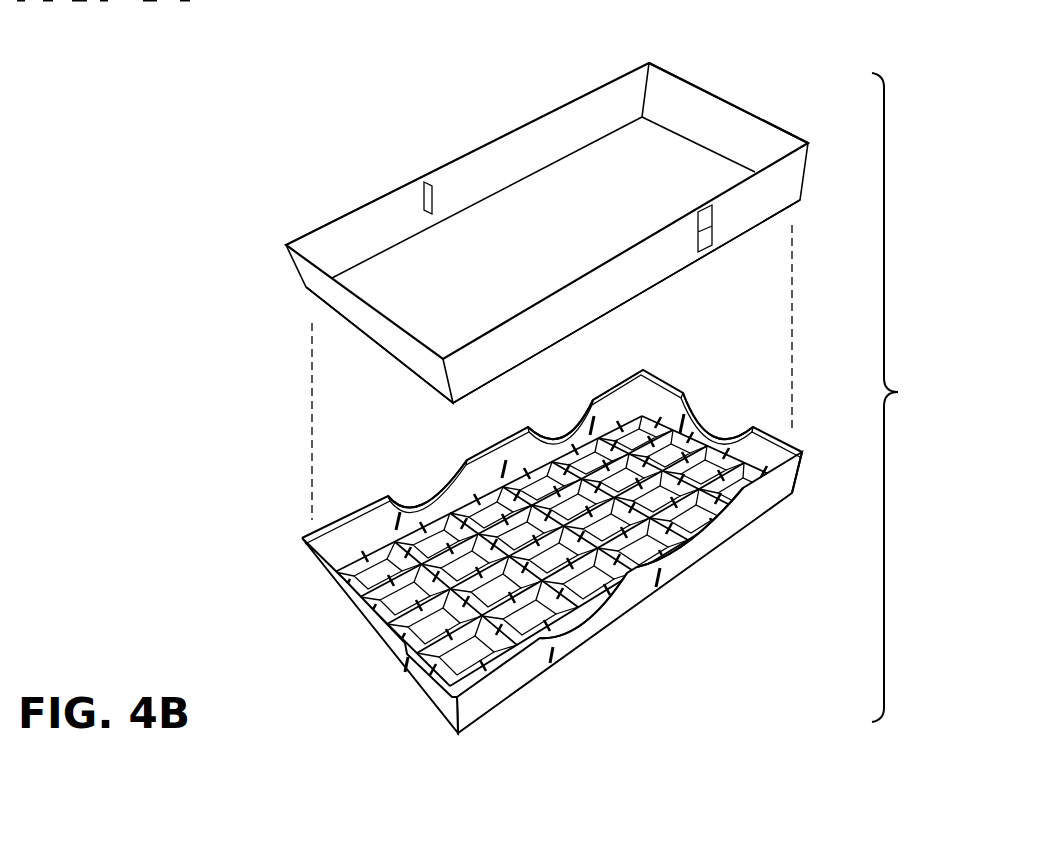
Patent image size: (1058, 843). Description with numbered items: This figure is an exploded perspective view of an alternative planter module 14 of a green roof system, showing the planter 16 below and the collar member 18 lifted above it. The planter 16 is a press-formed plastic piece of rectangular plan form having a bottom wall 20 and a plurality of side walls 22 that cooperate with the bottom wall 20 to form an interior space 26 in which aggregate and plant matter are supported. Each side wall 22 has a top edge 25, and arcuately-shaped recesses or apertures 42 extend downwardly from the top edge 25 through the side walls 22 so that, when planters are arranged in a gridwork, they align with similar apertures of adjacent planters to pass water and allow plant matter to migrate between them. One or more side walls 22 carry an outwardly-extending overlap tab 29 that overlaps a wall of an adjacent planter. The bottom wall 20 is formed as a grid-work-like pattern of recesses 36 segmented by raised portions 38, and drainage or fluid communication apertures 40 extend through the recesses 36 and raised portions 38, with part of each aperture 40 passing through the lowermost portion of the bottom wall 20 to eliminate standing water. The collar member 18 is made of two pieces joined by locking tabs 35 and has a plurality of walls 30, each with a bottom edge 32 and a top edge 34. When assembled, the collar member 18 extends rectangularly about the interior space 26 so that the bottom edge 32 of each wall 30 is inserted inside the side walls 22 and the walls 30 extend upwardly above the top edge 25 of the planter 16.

The planter module 14 is at (901, 397).
The planter 16 is at (562, 525).
The collar member 18 is at (735, 93).
The bottom wall 20 is at (697, 460).
The side walls 22 is at (663, 403).
The top edge 25 is at (806, 448).
The interior space 26 is at (538, 621).
The overlap tab 29 is at (745, 428).
The walls 30 is at (683, 110).
The bottom edge 32 is at (415, 372).
The top edge 34 is at (768, 118).
The locking tabs 35 is at (428, 190).
The recesses 36 is at (692, 468).
The raised portions 38 is at (617, 418).
The drainage apertures 40 is at (567, 447).
The arcuately-shaped apertures 42 is at (682, 417).